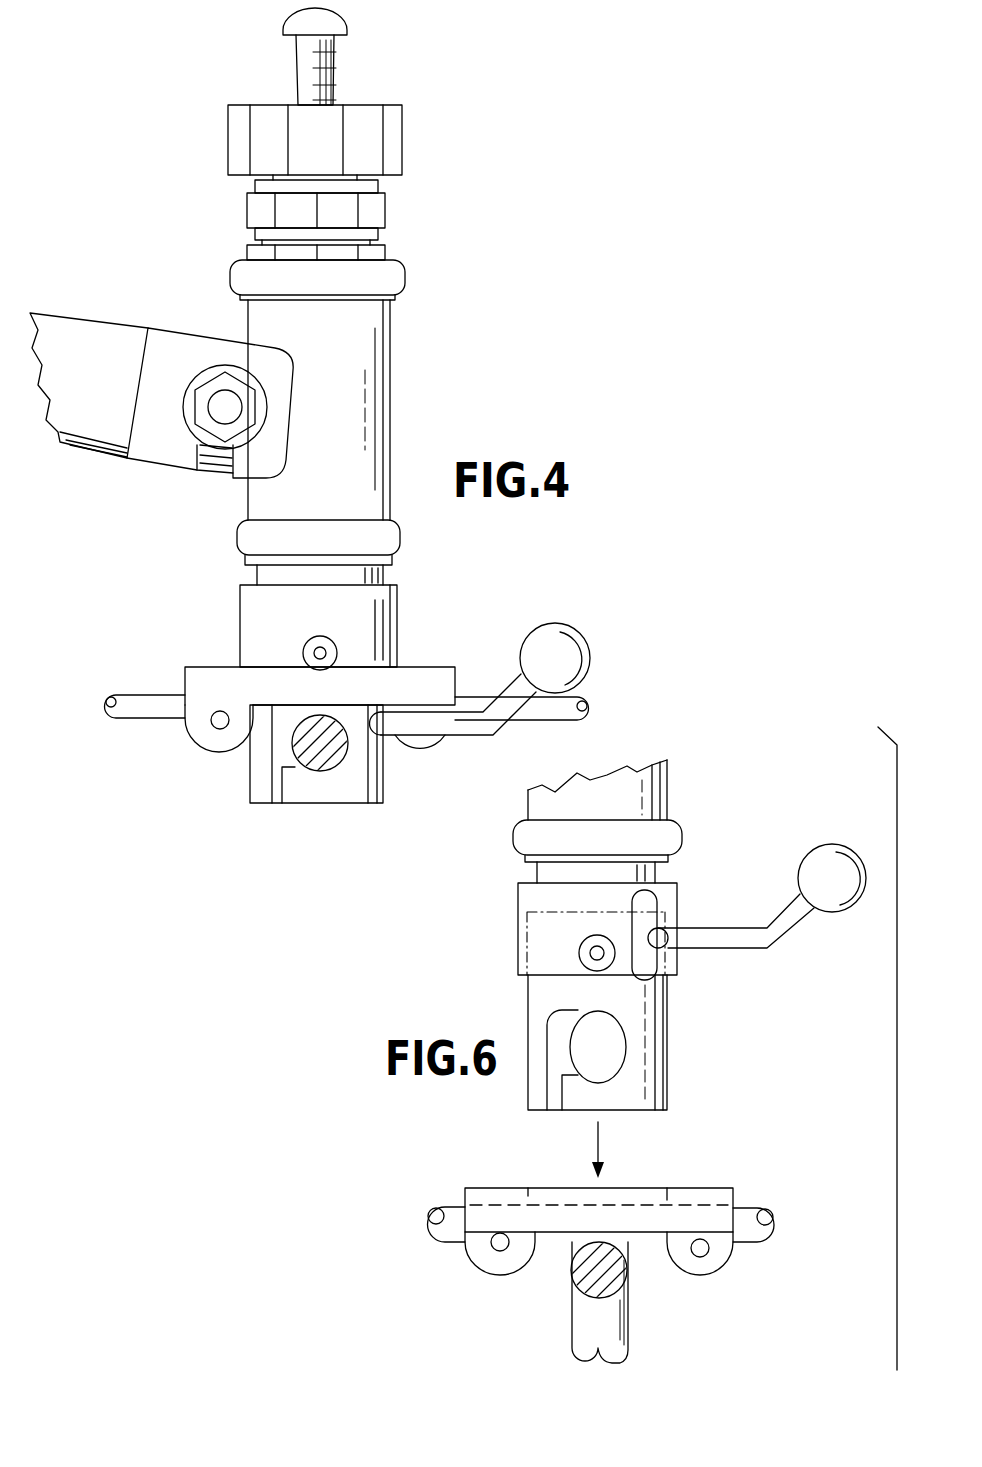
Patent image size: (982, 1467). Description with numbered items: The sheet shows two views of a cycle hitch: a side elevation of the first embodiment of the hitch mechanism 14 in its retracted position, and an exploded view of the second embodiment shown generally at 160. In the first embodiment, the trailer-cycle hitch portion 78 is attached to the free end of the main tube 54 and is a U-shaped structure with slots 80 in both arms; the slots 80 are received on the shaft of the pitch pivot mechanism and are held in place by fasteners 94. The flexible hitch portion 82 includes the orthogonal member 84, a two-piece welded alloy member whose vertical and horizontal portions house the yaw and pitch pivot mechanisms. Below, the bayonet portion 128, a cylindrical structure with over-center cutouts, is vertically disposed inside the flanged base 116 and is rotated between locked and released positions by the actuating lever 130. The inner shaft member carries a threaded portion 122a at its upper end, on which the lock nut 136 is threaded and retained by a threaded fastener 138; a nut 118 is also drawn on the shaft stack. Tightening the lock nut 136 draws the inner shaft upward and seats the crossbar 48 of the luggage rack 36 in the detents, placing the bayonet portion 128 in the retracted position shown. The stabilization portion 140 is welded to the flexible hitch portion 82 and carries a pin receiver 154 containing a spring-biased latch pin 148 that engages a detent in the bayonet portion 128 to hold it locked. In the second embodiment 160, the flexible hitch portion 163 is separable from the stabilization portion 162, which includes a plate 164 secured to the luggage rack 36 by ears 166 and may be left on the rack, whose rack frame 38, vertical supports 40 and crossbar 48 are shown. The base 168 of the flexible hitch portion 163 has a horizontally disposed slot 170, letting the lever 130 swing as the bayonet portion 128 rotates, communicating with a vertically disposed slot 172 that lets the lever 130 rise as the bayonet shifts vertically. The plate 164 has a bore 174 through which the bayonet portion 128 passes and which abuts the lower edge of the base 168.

In FIG. 4, the hitch mechanism 14 is at (505, 140).
In FIG. 4, the luggage rack 36 is at (522, 708).
In FIG. 6, the luggage rack 36 is at (755, 1245).
In FIG. 4, the rack frame 38 is at (143, 718).
In FIG. 6, the vertical supports 40 is at (572, 1322).
In FIG. 4, the crossbar 48 is at (320, 768).
In FIG. 6, the crossbar 48 is at (572, 1268).
In FIG. 4, the main tube 54 is at (87, 447).
In FIG. 4, the trailer-cycle hitch portion 78 is at (163, 333).
In FIG. 4, the slots 80 is at (213, 470).
In FIG. 4, the flexible hitch portion 82 is at (476, 323).
In FIG. 4, the orthogonal member 84 is at (390, 406).
In FIG. 6, the orthogonal member 84 is at (681, 791).
In FIG. 4, the fasteners 94 is at (253, 410).
In FIG. 4, the flanged base 116 is at (398, 600).
In FIG. 4, the lock nut 118 is at (385, 210).
In FIG. 4, the threaded portion 122a is at (338, 80).
In FIG. 4, the bayonet portion 128 is at (393, 785).
In FIG. 6, the bayonet portion 128 is at (667, 1060).
In FIG. 4, the actuating lever 130 is at (470, 737).
In FIG. 6, the actuating lever 130 is at (790, 940).
In FIG. 4, the lock nut 136 is at (403, 128).
In FIG. 4, the threaded fastener 138 is at (285, 25).
In FIG. 4, the stabilization portion 140 is at (204, 665).
In FIG. 4, the latch pin 148 is at (326, 652).
In FIG. 4, the pin receiver 154 is at (318, 645).
In FIG. 6, the hitch mechanism 160 is at (776, 771).
In FIG. 6, the stabilization portion 162 is at (735, 1197).
In FIG. 6, the flexible hitch portion 163 is at (515, 926).
In FIG. 6, the plate 164 is at (488, 1188).
In FIG. 6, the ears 166 is at (480, 1272).
In FIG. 6, the base 168 is at (677, 901).
In FIG. 6, the horizontally disposed slot 170 is at (653, 978).
In FIG. 6, the vertically disposed slot 172 is at (645, 892).
In FIG. 6, the bore 174 is at (650, 1198).